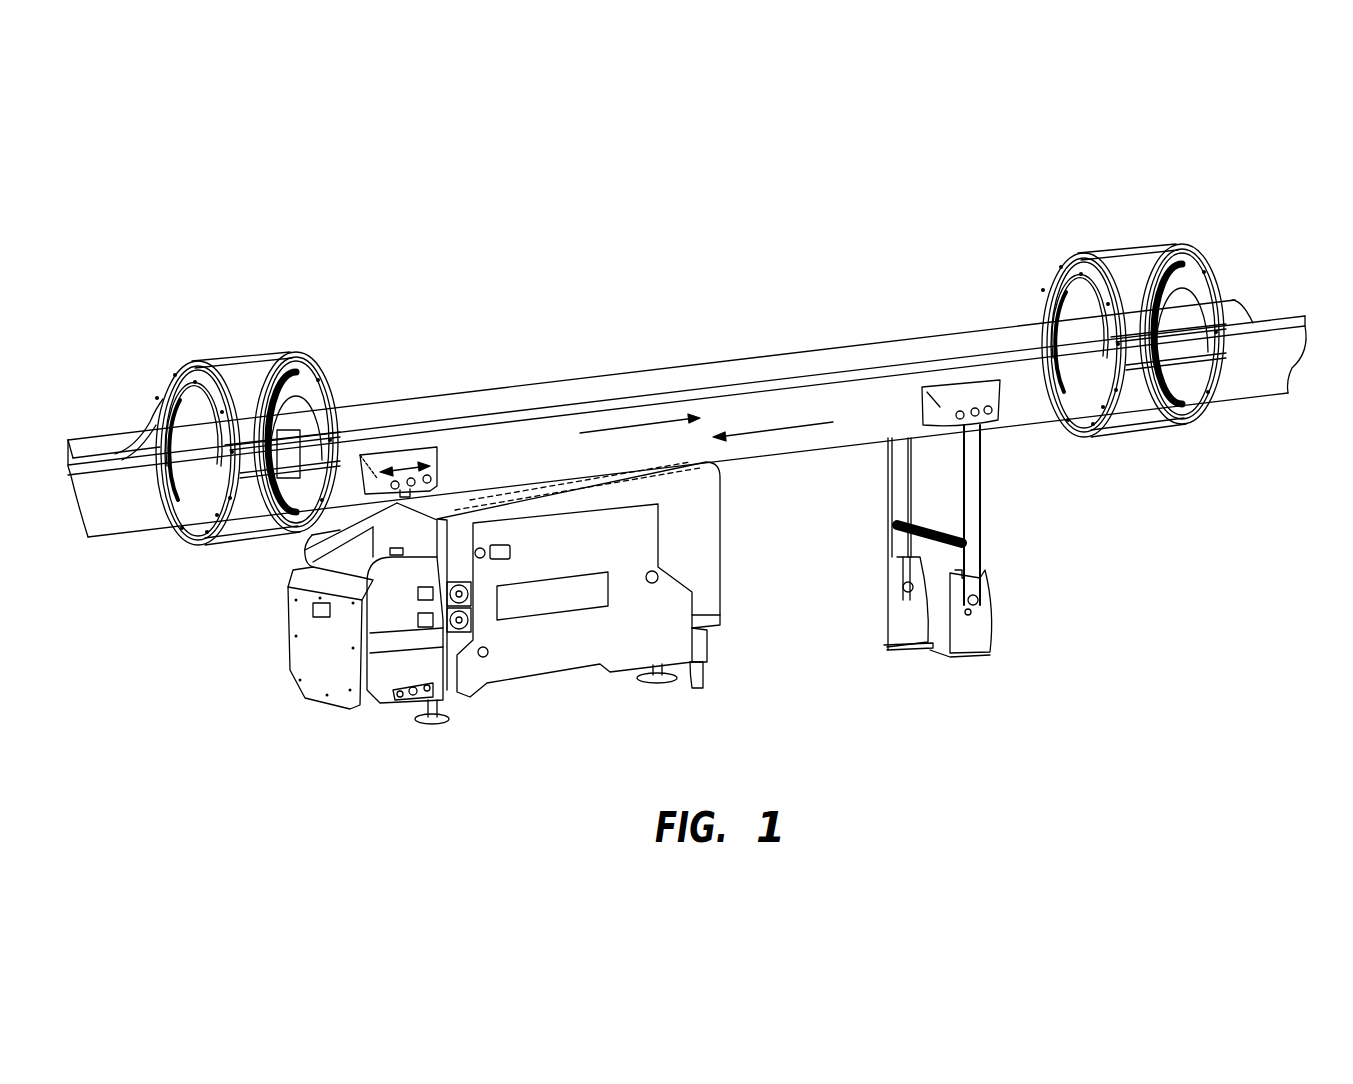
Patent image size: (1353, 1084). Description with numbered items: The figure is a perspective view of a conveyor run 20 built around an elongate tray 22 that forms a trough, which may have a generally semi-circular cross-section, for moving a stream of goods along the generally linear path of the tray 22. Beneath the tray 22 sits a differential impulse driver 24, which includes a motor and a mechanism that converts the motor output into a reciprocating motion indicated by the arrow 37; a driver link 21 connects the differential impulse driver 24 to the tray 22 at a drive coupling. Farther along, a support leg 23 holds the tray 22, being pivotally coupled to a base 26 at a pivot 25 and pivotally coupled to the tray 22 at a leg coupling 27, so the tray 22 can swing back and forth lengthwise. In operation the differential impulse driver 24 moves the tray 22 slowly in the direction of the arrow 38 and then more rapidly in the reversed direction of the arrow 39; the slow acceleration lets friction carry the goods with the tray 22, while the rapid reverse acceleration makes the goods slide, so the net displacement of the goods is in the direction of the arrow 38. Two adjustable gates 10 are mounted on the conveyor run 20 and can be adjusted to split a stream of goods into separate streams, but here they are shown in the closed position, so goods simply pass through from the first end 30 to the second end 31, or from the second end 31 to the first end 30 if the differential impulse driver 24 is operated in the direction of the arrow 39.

The adjustable gate 10 is at (299, 297).
The conveyor run 20 is at (597, 280).
The driver link 21 is at (373, 520).
The tray 22 is at (766, 374).
The support leg 23 is at (975, 510).
The differential impulse driver 24 is at (708, 551).
The pivot 25 is at (983, 600).
The base 26 is at (985, 645).
The leg coupling 27 is at (990, 400).
The first end 30 is at (97, 434).
The second end 31 is at (1282, 313).
The arrow 37 is at (400, 468).
The arrow 38 is at (630, 423).
The arrow 39 is at (792, 432).